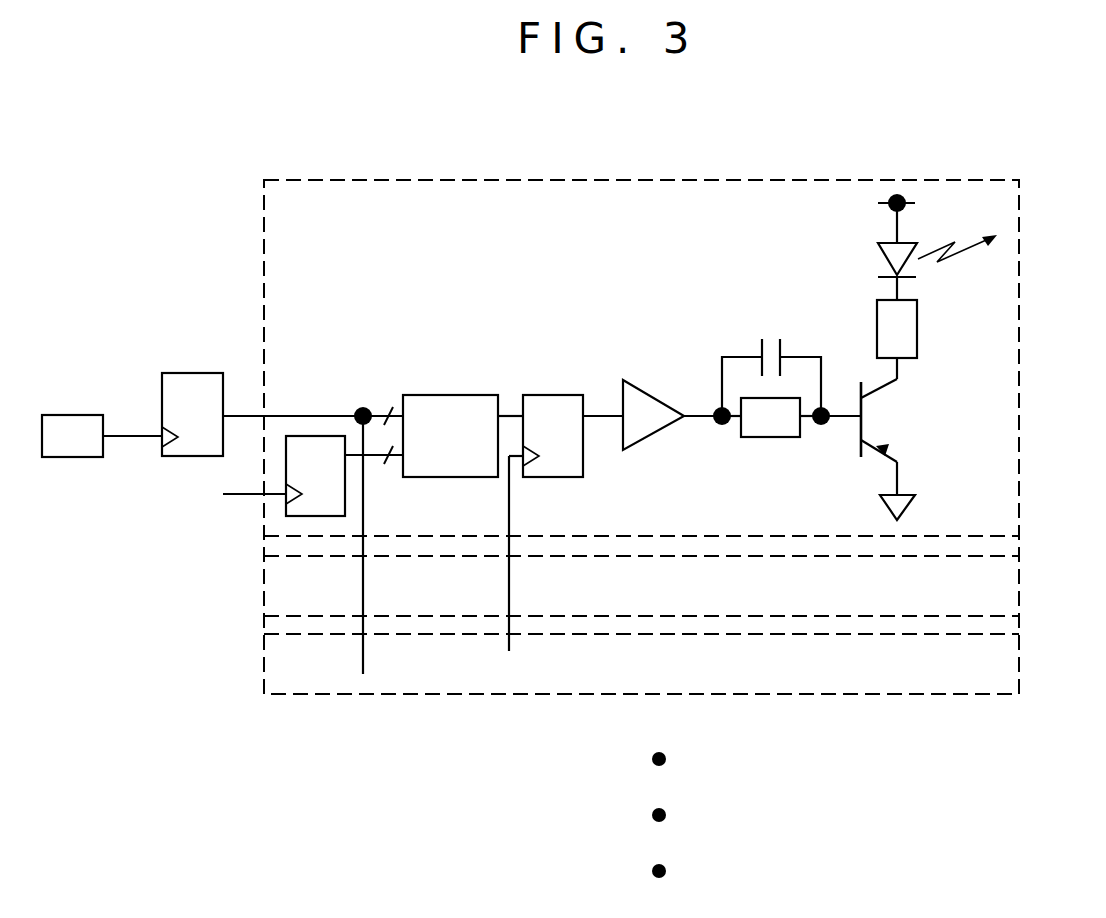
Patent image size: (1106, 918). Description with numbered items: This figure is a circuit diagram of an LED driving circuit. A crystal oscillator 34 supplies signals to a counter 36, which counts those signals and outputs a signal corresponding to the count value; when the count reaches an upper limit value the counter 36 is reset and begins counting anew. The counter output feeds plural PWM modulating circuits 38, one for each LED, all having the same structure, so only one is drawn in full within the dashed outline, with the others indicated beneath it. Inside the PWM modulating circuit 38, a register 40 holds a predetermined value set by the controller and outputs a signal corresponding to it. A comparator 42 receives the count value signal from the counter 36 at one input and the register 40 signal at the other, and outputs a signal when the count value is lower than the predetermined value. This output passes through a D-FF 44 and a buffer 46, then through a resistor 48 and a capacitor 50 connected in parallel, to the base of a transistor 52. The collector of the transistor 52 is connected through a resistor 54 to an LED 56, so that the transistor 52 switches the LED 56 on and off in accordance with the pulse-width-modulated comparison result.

The crystal oscillator 34 is at (63, 459).
The counter 36 is at (180, 457).
The PWM modulating circuit 38 is at (1020, 352).
The register 40 is at (286, 507).
The comparator 42 is at (476, 478).
The D-FF 44 is at (553, 478).
The buffer 46 is at (660, 434).
The resistor 48 is at (757, 438).
The capacitor 50 is at (809, 357).
The transistor 52 is at (882, 390).
The resistor 54 is at (918, 335).
The LED 56 is at (884, 243).